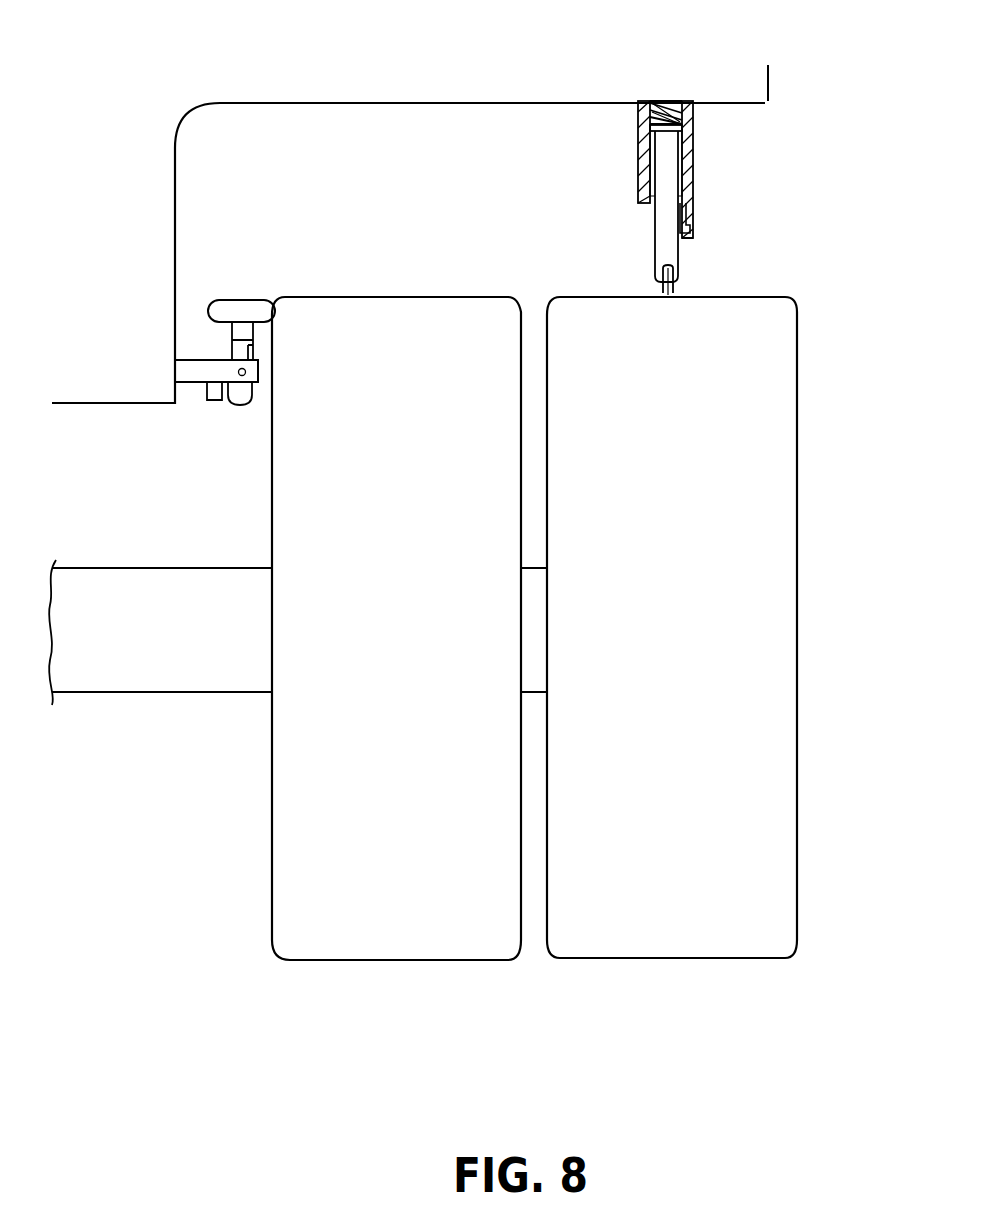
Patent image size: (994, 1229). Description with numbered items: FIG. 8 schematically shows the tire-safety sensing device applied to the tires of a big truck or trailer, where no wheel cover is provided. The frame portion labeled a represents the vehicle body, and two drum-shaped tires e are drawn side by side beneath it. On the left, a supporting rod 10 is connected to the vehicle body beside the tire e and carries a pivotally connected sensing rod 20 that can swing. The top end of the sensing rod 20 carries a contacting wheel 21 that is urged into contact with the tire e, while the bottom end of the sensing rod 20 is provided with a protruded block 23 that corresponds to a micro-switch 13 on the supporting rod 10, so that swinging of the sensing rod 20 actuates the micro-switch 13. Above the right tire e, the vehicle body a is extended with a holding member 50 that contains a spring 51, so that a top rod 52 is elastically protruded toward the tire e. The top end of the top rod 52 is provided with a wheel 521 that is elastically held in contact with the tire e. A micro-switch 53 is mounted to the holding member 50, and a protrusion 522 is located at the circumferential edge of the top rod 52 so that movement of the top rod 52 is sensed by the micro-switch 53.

The supporting rod 10 is at (192, 377).
The micro-switch 13 is at (213, 398).
The sensing rod 20 is at (248, 398).
The contacting wheel 21 is at (266, 312).
The protruded block 23 is at (228, 393).
The holding member 50 is at (645, 160).
The spring 51 is at (665, 97).
The top rod 52 is at (668, 232).
The wheel 521 is at (668, 298).
The protrusion 522 is at (690, 212).
The micro-switch 53 is at (695, 240).
The frame a is at (765, 99).
The tire e is at (790, 738).